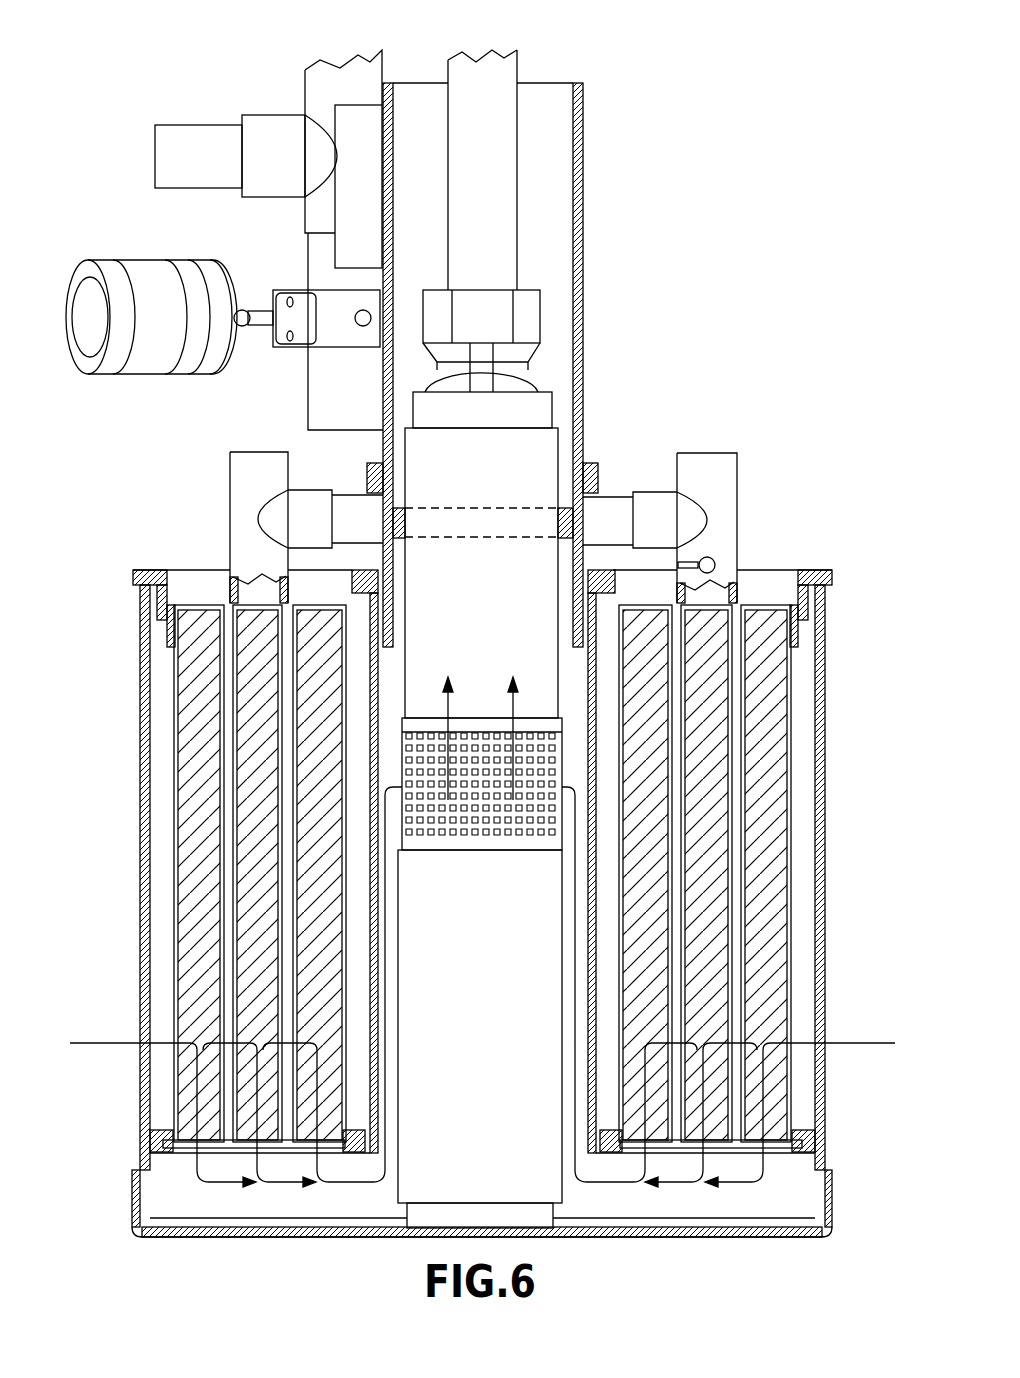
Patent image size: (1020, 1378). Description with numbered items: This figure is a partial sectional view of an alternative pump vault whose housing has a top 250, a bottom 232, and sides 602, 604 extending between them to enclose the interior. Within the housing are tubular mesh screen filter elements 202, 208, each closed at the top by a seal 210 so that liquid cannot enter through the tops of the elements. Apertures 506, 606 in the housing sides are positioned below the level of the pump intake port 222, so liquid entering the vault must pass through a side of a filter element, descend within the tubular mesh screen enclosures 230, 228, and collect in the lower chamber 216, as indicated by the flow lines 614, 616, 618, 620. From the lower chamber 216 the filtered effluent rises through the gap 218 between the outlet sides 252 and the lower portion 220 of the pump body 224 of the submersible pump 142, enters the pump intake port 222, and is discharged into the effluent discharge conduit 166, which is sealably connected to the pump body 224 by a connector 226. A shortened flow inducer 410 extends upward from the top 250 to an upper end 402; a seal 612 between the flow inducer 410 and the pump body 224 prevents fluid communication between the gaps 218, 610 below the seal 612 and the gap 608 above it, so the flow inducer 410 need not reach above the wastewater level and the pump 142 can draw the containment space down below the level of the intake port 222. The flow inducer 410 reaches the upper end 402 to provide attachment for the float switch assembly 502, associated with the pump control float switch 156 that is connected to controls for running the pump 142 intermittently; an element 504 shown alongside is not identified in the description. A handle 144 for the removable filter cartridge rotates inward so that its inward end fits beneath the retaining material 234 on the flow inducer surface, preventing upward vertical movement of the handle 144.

The float switch assembly 502 is at (355, 75).
The effluent discharge conduit 166 is at (480, 62).
The gap 608 is at (418, 102).
The upper end 402 is at (552, 82).
The inlet port 504 is at (205, 125).
The flow inducer 410 is at (590, 190).
The pump control float switch 156 is at (140, 262).
The connector 226 is at (542, 302).
The retaining material 234 is at (600, 470).
The handle 144 is at (705, 453).
The submersible pump 142 is at (380, 470).
The pump body 224 is at (465, 484).
The seal 612 is at (400, 545).
The gap 610 is at (400, 612).
The outlet sides 252 is at (378, 672).
The top 250 is at (834, 580).
The seal 210 is at (775, 603).
The pump intake port 222 is at (482, 733).
The side 602 is at (826, 688).
The side 604 is at (143, 810).
The filter element 202 is at (165, 868).
The filter element 208 is at (800, 895).
The tubular mesh screen enclosure 230 is at (195, 935).
The tubular mesh screen enclosure 228 is at (775, 935).
The gap 218 is at (400, 950).
The lower portion 220 is at (465, 1057).
The flow line 616 is at (108, 1043).
The flow line 614 is at (856, 1043).
The aperture 606 is at (143, 1062).
The aperture 506 is at (825, 1062).
The flow line 620 is at (592, 1084).
The flow line 618 is at (672, 1190).
The lower chamber 216 is at (282, 1205).
The bottom 232 is at (632, 1240).